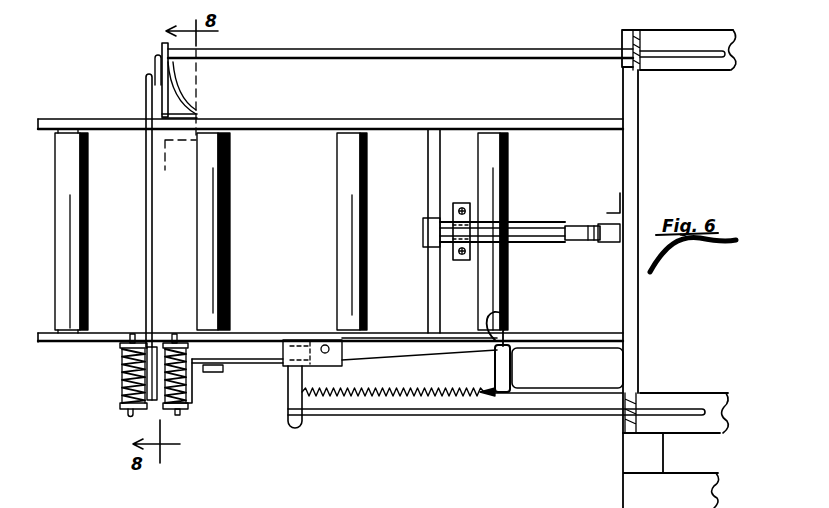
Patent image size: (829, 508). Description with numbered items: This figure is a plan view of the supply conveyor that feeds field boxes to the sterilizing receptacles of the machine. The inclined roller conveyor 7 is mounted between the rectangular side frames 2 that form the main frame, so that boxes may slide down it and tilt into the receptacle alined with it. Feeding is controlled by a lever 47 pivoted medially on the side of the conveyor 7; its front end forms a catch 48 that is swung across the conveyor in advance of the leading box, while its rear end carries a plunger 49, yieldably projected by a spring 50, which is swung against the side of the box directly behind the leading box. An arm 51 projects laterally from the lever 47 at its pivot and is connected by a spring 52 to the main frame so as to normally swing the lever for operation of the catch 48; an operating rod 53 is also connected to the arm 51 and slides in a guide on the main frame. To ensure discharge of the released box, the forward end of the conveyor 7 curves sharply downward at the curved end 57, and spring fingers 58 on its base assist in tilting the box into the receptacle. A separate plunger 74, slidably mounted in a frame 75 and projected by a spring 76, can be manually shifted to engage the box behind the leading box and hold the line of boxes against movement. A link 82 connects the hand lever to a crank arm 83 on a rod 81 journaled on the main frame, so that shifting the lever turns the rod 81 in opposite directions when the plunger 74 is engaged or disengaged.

The side frame 2 is at (641, 36).
The inclined roller conveyor 7 is at (290, 119).
The lever 47 is at (398, 345).
The catch 48 is at (503, 330).
The plunger 49 is at (176, 334).
The spring 50 is at (186, 384).
The arm 51 is at (292, 398).
The spring 52 is at (395, 395).
The operating rod 53 is at (450, 414).
The curved end 57 is at (606, 246).
The spring fingers 58 is at (561, 232).
The plunger 74 is at (133, 334).
The frame 75 is at (128, 414).
The spring 76 is at (123, 377).
The rod 81 is at (606, 51).
The link 82 is at (146, 219).
The crank arm 83 is at (156, 63).